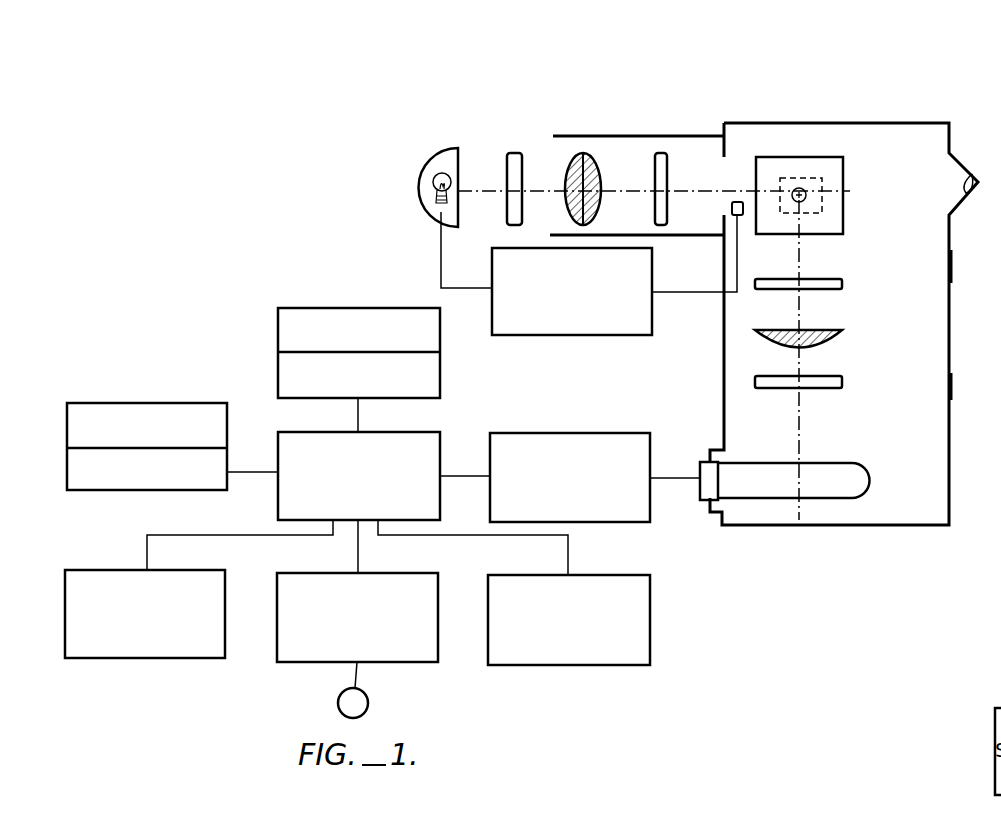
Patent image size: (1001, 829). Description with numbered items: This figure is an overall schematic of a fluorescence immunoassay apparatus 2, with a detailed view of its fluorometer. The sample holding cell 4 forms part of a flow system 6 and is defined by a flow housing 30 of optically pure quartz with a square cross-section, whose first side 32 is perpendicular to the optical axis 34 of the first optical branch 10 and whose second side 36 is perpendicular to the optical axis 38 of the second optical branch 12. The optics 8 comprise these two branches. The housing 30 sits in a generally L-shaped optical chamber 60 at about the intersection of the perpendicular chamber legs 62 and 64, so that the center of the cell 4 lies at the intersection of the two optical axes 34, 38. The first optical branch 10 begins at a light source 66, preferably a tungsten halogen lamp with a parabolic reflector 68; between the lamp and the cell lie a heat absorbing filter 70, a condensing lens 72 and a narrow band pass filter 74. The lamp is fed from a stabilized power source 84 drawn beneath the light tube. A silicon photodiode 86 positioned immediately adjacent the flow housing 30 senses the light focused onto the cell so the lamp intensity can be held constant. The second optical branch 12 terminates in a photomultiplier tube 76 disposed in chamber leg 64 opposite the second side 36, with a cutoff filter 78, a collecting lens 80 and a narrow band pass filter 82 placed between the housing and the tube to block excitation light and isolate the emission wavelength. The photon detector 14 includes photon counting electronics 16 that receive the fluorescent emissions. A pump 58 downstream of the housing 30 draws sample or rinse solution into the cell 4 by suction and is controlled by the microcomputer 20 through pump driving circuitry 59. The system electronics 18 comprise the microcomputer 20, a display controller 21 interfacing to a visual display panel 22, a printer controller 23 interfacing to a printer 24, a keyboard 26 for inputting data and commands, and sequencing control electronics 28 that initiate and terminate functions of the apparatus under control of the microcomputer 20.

The apparatus 2 is at (853, 60).
The sample holding cell 4 is at (836, 197).
The flow system 6 is at (975, 172).
The optics 8 is at (740, 114).
The first optical branch 10 is at (542, 130).
The second optical branch 12 is at (913, 449).
The photon detector 14 is at (828, 502).
The photon counting electronics 16 is at (635, 433).
The system electronics 18 is at (113, 680).
The microcomputer 20 is at (410, 432).
The display controller 21 is at (442, 368).
The visual display panel 22 is at (372, 308).
The printer controller 23 is at (210, 492).
The printer 24 is at (205, 403).
The keyboard 26 is at (208, 570).
The sequencing control electronics 28 is at (636, 575).
The flow housing 30 is at (832, 154).
The first side 32 is at (752, 162).
The optical axis 34 is at (610, 192).
The second side 36 is at (871, 262).
The optical axis 38 is at (800, 442).
The pump 58 is at (369, 703).
The pump driving circuitry 59 is at (412, 573).
The optical chamber 60 is at (926, 121).
The chamber leg 62 is at (630, 136).
The chamber leg 64 is at (949, 357).
The light source 66 is at (432, 179).
The parabolic reflector 68 is at (420, 207).
The heat absorbing filter 70 is at (512, 152).
The condensing lens 72 is at (583, 152).
The narrow band pass filter 74 is at (663, 152).
The photomultiplier tube 76 is at (742, 494).
The cutoff filter 78 is at (842, 288).
The collecting lens 80 is at (840, 334).
The narrow band pass filter 82 is at (842, 388).
The stabilized power source 84 is at (614, 338).
The silicon photodiode 86 is at (730, 208).